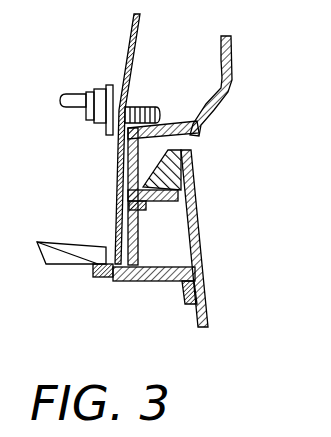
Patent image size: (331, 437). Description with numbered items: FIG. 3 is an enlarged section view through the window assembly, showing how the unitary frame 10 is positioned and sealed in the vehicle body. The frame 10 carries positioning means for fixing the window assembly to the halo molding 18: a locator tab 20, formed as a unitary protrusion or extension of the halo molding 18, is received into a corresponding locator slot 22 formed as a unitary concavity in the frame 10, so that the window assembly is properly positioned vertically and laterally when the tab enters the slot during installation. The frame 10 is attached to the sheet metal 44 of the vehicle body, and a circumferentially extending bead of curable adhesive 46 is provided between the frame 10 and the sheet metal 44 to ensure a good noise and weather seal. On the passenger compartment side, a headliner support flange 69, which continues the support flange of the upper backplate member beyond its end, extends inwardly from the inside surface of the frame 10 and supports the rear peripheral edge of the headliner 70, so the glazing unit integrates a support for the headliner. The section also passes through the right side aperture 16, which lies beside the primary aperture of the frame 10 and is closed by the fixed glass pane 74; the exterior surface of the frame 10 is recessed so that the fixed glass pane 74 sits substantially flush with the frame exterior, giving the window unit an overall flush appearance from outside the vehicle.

The frame 10 is at (142, 281).
The right side aperture 16 is at (162, 286).
The halo molding 18 is at (225, 42).
The locator tab 20 is at (120, 230).
The locator slot 22 is at (140, 205).
The sheet metal 44 is at (104, 139).
The curable adhesive bead 46 is at (114, 203).
The headliner support flange 69 is at (120, 270).
The headliner 70 is at (66, 264).
The fixed glass pane 74 is at (198, 202).